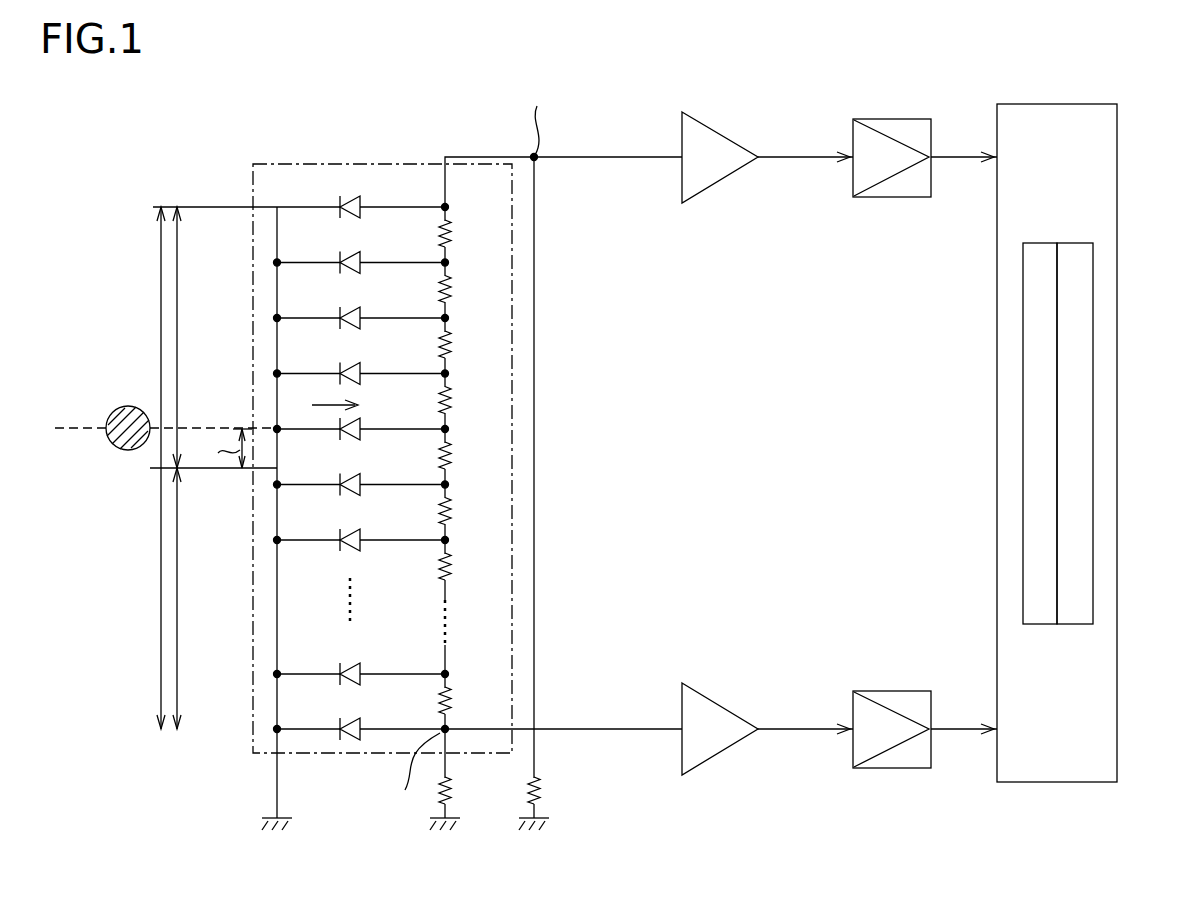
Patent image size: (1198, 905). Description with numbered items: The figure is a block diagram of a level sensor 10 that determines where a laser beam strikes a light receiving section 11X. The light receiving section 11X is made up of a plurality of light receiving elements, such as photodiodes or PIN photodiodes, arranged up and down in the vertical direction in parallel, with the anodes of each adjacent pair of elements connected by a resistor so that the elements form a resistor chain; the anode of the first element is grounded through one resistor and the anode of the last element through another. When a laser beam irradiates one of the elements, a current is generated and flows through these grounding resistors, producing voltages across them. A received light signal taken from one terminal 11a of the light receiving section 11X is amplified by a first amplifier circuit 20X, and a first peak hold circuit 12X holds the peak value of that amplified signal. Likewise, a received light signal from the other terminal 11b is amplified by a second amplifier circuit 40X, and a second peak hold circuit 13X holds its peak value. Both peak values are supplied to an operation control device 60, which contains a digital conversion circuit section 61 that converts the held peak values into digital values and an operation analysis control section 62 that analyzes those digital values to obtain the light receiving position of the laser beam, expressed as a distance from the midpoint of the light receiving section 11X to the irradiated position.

The level sensor 10 is at (809, 88).
The light receiving section 11X is at (327, 160).
The one terminal 11a is at (471, 156).
The other terminal 11b is at (505, 728).
The first peak hold circuit 12X is at (898, 118).
The second peak hold circuit 13X is at (898, 690).
The first amplifier circuit 20X is at (704, 128).
The second amplifier circuit 40X is at (704, 700).
The operation control device 60 is at (1053, 103).
The digital conversion circuit section 61 is at (1022, 386).
The operation analysis control section 62 is at (1094, 387).